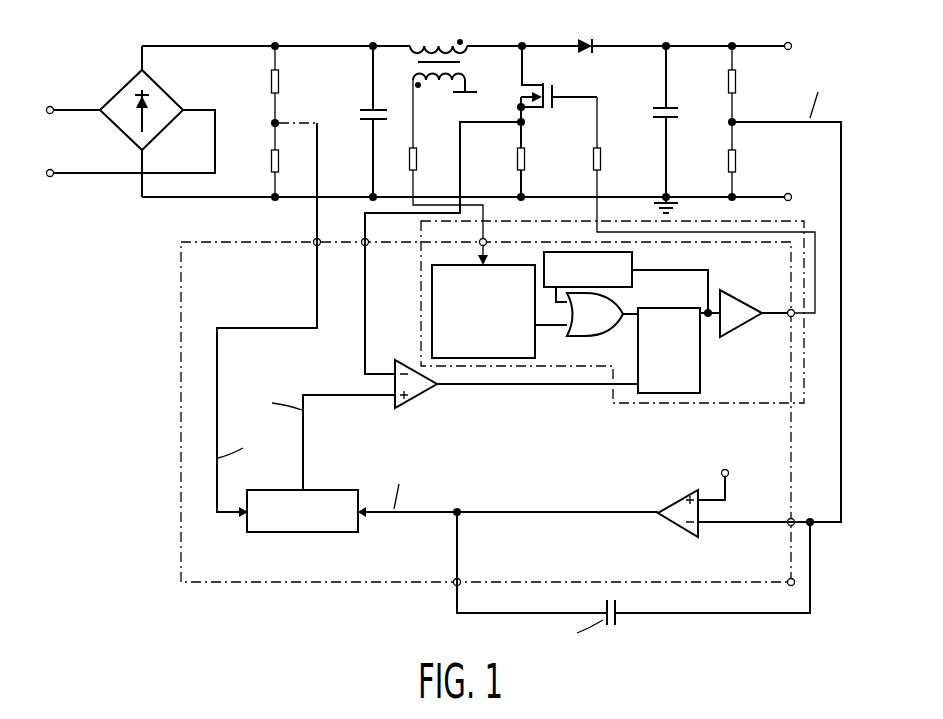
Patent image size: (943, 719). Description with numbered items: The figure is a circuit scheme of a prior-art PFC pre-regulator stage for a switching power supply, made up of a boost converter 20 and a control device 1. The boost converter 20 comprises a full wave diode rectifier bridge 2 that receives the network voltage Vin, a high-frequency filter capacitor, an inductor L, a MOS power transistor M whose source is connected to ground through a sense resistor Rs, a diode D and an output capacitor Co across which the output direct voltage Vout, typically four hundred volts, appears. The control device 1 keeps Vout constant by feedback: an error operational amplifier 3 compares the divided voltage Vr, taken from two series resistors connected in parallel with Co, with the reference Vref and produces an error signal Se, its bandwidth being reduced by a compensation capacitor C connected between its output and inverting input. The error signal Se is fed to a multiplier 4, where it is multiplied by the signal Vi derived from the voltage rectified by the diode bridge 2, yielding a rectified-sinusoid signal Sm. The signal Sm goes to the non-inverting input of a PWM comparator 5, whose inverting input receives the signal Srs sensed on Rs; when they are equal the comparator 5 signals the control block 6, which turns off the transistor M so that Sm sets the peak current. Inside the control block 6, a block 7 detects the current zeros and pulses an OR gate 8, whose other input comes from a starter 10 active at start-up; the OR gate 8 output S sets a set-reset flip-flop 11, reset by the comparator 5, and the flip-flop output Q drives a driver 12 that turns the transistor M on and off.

The boost converter 20 is at (296, 30).
The full wave diode rectifier bridge 2 is at (120, 97).
The control device 1 is at (181, 285).
The control block 6 is at (421, 330).
The block adapted to detect the current zeros 7 is at (535, 341).
The OR gate 8 is at (597, 329).
The starter 10 is at (633, 278).
The set-reset flip-flop 11 is at (687, 354).
The driver 12 is at (738, 302).
The PWM comparator 5 is at (393, 402).
The multiplier 4 is at (323, 490).
The error operational amplifier 3 is at (702, 516).